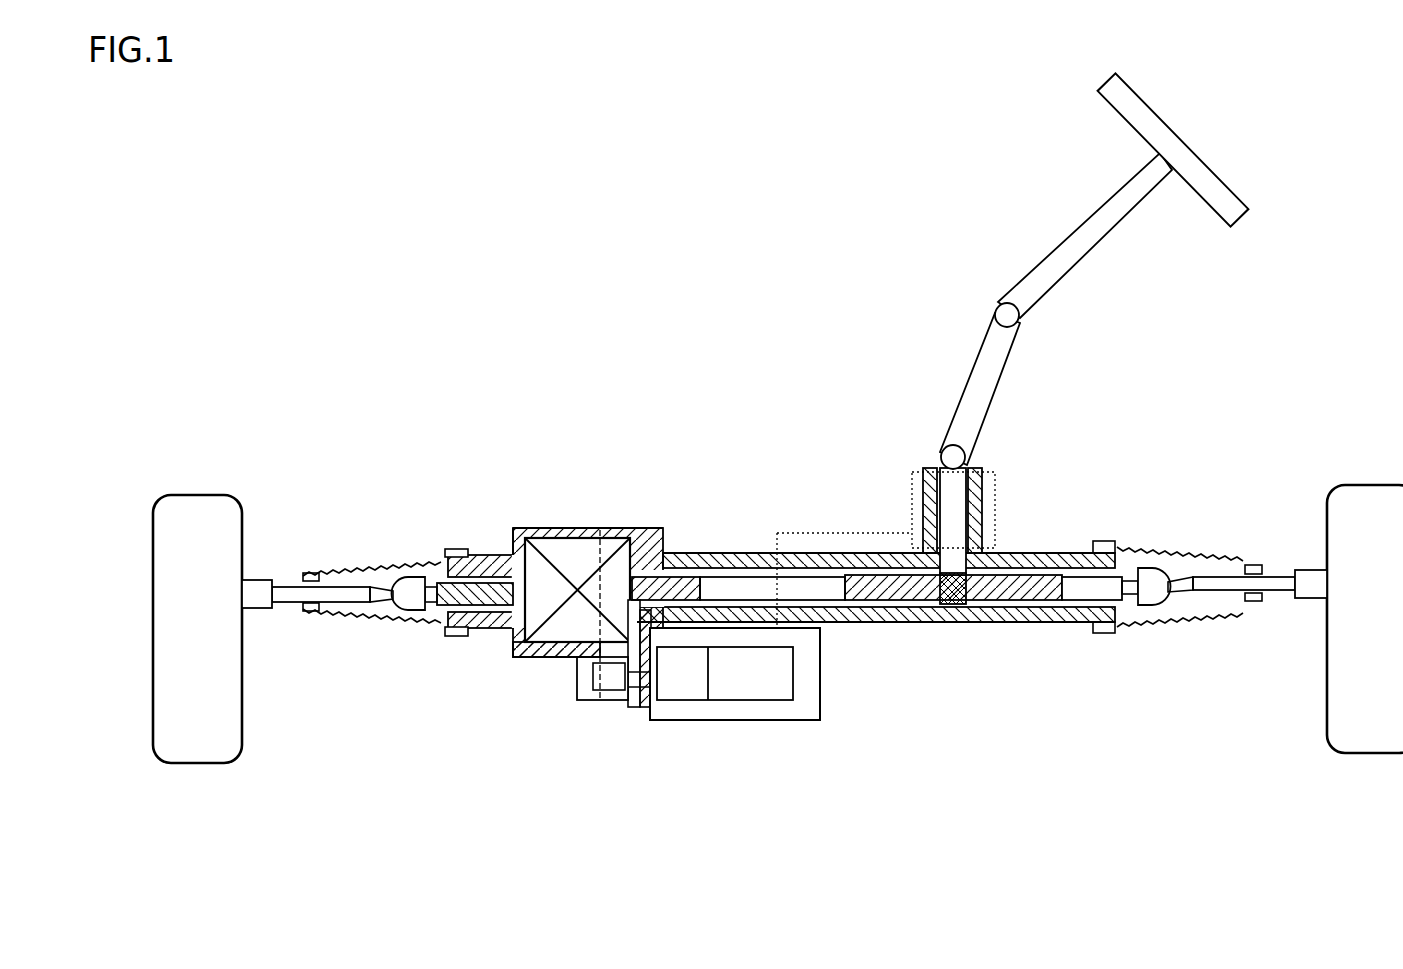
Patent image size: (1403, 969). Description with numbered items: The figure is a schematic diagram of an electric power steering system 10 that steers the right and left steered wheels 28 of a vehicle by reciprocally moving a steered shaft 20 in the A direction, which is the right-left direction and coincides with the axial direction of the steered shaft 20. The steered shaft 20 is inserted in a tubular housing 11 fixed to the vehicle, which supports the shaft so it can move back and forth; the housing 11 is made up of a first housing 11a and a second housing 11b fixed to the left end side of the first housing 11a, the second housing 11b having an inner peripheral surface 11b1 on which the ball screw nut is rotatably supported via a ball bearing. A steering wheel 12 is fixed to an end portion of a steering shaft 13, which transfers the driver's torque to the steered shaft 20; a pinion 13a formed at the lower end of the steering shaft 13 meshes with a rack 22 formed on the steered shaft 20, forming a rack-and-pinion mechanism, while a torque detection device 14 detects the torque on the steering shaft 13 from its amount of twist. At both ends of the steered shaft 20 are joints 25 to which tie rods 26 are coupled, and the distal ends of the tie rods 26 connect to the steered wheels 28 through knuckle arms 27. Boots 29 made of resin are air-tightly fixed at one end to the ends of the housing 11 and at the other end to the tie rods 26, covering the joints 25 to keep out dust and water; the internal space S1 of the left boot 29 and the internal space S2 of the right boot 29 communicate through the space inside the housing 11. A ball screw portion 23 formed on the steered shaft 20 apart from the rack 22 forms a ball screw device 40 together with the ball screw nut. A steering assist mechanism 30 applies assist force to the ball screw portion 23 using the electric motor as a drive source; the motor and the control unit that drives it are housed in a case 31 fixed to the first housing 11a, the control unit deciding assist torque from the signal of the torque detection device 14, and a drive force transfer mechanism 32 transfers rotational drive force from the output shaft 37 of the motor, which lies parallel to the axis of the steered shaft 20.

The electric power steering system 10 is at (782, 382).
The housing 11 is at (763, 553).
The first housing 11a is at (720, 553).
The second housing 11b is at (573, 543).
The inner peripheral surface 11b1 is at (607, 547).
The steering wheel 12 is at (1207, 160).
The steering shaft 13 is at (942, 488).
The pinion 13a is at (952, 605).
The torque detection device 14 is at (995, 495).
The steered shaft 20 is at (1087, 590).
The rack 22 is at (900, 608).
The ball screw portion 23 is at (673, 576).
The joint 25 is at (410, 611).
The tie rod 26 is at (298, 596).
The knuckle arm 27 is at (263, 600).
The steered wheel 28 is at (203, 512).
The boot 29 is at (348, 632).
The steering assist mechanism 30 is at (597, 704).
The case 31 is at (783, 720).
The drive force transfer mechanism 32 is at (590, 655).
The output shaft 37 is at (640, 684).
The ball screw device 40 is at (553, 530).
The A direction A is at (527, 297).
The internal space S1 is at (383, 580).
The internal space S2 is at (1188, 570).